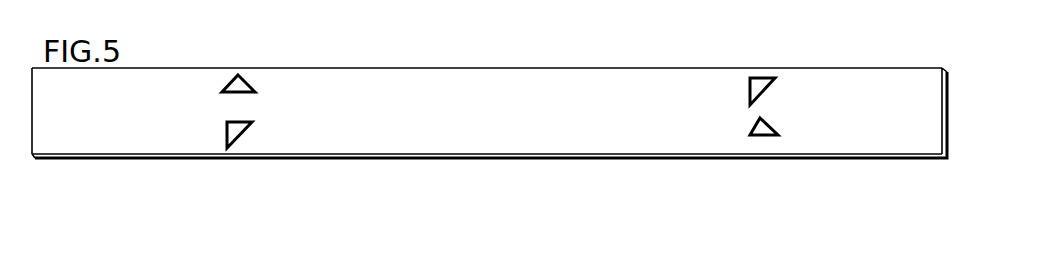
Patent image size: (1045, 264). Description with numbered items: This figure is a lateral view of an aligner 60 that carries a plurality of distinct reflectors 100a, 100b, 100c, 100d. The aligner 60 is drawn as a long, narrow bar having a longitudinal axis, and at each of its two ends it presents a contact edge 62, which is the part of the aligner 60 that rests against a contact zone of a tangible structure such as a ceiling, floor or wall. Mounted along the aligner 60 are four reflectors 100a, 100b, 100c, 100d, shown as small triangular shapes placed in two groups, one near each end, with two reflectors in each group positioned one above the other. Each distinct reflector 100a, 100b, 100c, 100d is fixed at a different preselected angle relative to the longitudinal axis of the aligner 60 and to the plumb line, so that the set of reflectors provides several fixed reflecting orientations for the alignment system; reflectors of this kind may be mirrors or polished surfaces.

The aligner 60 is at (471, 151).
The contact edge 62 is at (34, 103).
The reflector 100a is at (239, 71).
The reflector 100b is at (758, 77).
The reflector 100c is at (233, 134).
The reflector 100d is at (749, 133).